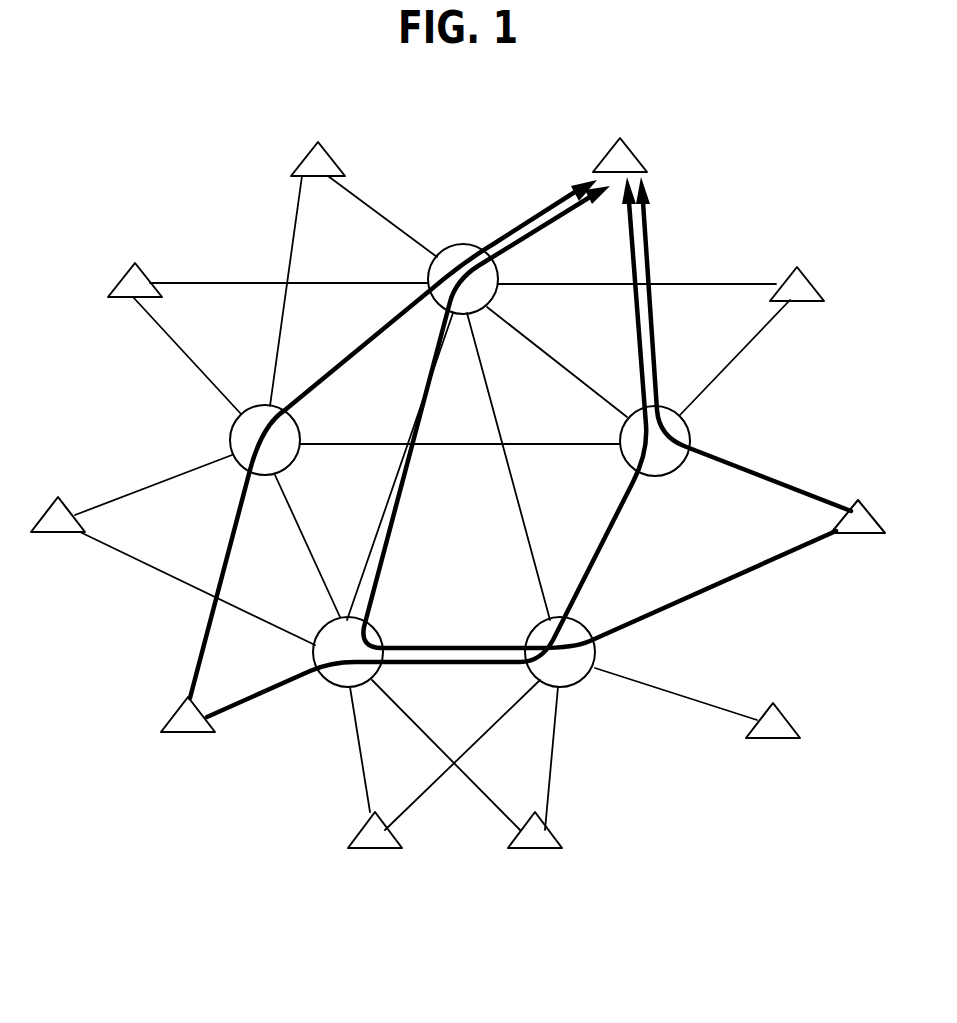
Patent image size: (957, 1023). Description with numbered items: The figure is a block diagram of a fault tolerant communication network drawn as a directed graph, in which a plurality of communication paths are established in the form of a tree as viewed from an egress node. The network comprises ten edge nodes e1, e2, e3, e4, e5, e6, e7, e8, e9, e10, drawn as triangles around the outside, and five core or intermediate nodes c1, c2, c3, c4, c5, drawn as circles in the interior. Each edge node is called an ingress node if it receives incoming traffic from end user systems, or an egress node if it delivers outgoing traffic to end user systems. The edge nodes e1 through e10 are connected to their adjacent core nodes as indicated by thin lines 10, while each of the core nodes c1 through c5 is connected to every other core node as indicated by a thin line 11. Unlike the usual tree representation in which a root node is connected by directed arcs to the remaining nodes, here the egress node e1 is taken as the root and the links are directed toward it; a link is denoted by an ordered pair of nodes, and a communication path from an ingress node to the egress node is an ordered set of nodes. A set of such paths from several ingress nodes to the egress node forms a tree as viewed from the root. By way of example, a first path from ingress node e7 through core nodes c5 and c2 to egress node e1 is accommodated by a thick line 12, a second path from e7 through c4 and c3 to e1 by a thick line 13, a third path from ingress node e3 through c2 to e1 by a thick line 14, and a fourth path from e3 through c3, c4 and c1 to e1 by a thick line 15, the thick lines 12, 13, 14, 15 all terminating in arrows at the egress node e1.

The thin lines 10 is at (212, 282).
The thin line 11 is at (557, 362).
The thick line 12 is at (524, 222).
The thick line 13 is at (630, 263).
The thick line 14 is at (647, 233).
The thick line 15 is at (527, 243).
The core node c1 is at (460, 245).
The core node c2 is at (663, 478).
The core node c3 is at (586, 680).
The core node c4 is at (335, 682).
The core node c5 is at (230, 440).
The edge node e1 is at (624, 140).
The edge node e2 is at (798, 268).
The edge node e3 is at (857, 502).
The edge node e4 is at (774, 703).
The edge node e5 is at (543, 848).
The edge node e6 is at (380, 848).
The edge node e7 is at (192, 732).
The edge node e8 is at (58, 498).
The edge node e9 is at (137, 263).
The edge node e10 is at (316, 142).